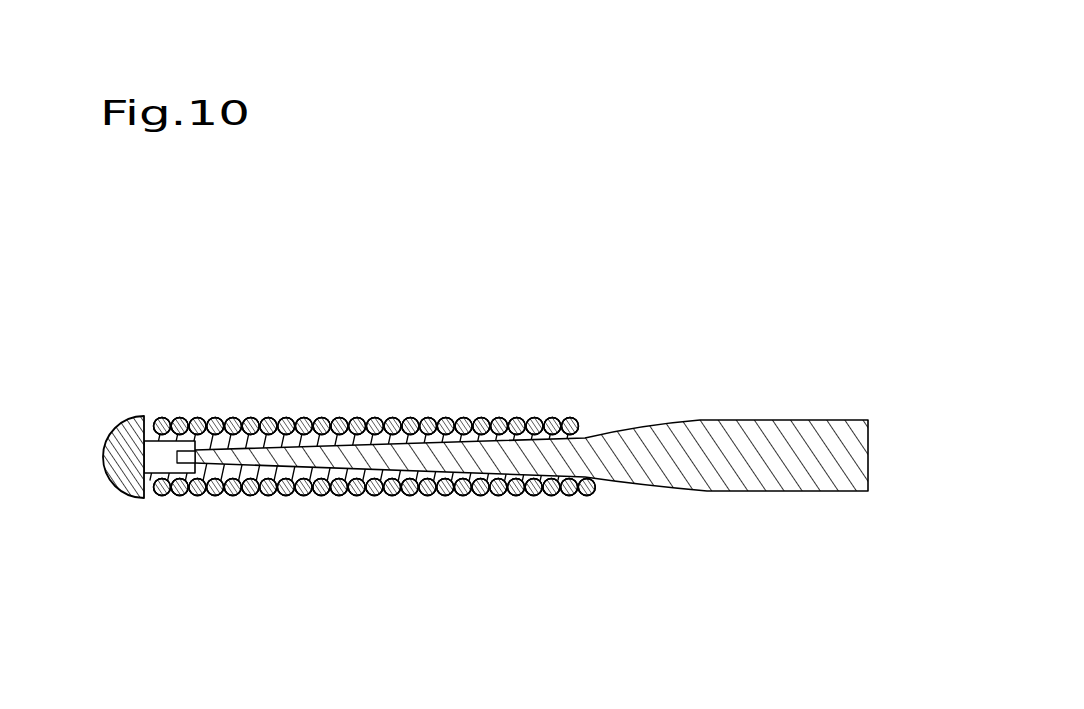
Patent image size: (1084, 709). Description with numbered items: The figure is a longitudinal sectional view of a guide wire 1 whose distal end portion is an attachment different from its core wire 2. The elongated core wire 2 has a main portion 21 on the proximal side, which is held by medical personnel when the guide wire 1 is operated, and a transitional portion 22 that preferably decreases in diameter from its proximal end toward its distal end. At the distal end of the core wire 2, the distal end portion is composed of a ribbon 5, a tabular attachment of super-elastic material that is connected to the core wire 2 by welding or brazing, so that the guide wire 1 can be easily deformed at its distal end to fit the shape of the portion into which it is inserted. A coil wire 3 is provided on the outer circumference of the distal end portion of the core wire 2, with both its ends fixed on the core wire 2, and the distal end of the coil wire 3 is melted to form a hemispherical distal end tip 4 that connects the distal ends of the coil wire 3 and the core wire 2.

The guide wire 1 is at (502, 375).
The core wire 2 is at (708, 413).
The coil wire 3 is at (307, 420).
The distal end tip 4 is at (128, 420).
The ribbon 5 is at (163, 462).
The main portion 21 is at (720, 475).
The transitional portion 22 is at (397, 465).